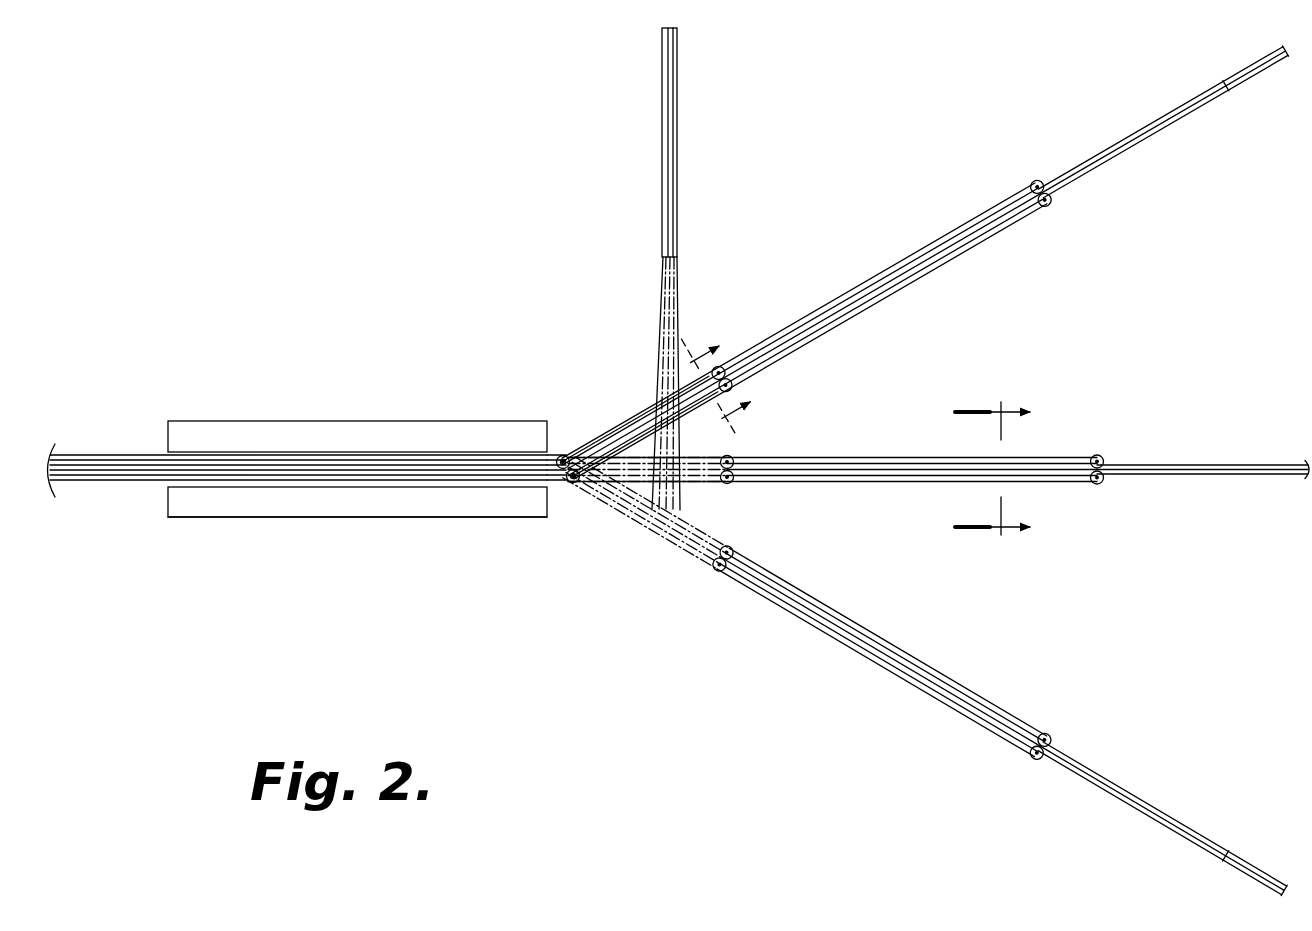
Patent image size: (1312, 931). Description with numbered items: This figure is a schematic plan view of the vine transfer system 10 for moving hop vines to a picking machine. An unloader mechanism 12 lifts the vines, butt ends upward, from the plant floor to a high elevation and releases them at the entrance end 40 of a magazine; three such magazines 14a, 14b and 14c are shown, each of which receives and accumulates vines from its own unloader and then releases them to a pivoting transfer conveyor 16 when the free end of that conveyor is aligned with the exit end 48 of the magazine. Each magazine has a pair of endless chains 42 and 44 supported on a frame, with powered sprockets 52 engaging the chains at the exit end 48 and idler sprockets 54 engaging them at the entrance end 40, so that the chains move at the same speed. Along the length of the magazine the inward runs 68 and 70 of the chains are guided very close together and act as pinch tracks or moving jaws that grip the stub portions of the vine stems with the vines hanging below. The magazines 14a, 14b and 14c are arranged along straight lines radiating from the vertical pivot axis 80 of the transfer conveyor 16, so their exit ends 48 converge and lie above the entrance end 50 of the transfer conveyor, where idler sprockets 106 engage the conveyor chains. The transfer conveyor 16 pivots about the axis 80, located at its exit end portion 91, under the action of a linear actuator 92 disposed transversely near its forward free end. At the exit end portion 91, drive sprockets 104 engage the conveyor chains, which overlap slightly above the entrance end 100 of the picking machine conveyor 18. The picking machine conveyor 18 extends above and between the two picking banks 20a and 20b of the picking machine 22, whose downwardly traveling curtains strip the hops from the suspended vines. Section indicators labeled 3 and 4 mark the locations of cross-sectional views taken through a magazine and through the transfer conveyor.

The vine transfer system 10 is at (306, 229).
The unloader mechanism 12 is at (1128, 126).
The magazine 14a is at (889, 178).
The magazine 14b is at (907, 410).
The magazine 14c is at (930, 752).
The transfer conveyor 16 is at (581, 366).
The picking machine conveyor 18 is at (128, 442).
The picking bank 20a is at (210, 528).
The picking bank 20b is at (233, 408).
The picking machine 22 is at (384, 520).
The entrance end 40 is at (1034, 178).
The endless chain 42 is at (998, 206).
The endless chain 44 is at (1000, 240).
The exit end 48 is at (722, 366).
The entrance end of transfer conveyor 50 is at (693, 371).
The powered sprocket 52 is at (745, 355).
The idler sprocket 54 is at (733, 388).
The inward chain run 68 is at (837, 462).
The inward chain run 70 is at (840, 484).
The pivot axis 80 is at (574, 485).
The exit end portion of transfer conveyor 91 is at (577, 440).
The linear actuator 92 is at (665, 127).
The entrance end of picking machine conveyor 100 is at (560, 458).
The drive sprocket 104 is at (566, 458).
The idler sprocket 106 is at (653, 455).
The section line 3- 3 is at (1004, 470).
The section line 4- 4 is at (722, 379).